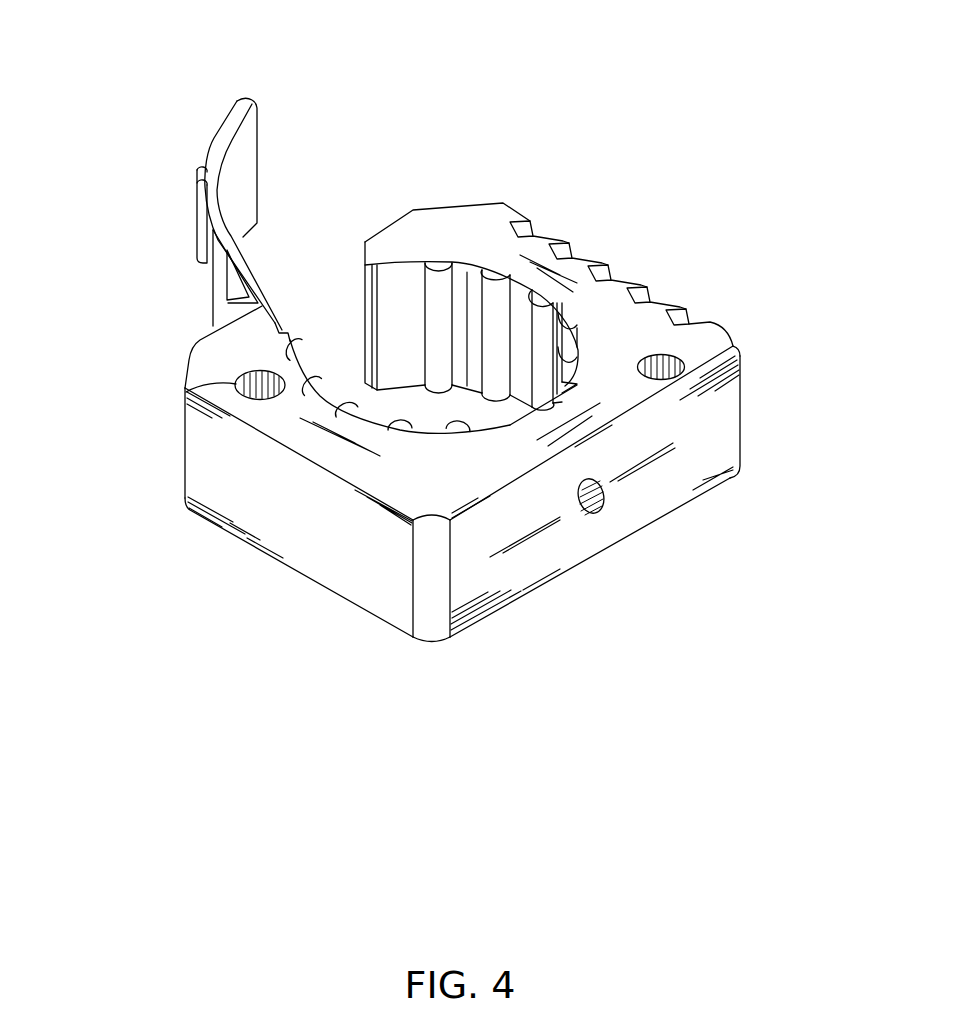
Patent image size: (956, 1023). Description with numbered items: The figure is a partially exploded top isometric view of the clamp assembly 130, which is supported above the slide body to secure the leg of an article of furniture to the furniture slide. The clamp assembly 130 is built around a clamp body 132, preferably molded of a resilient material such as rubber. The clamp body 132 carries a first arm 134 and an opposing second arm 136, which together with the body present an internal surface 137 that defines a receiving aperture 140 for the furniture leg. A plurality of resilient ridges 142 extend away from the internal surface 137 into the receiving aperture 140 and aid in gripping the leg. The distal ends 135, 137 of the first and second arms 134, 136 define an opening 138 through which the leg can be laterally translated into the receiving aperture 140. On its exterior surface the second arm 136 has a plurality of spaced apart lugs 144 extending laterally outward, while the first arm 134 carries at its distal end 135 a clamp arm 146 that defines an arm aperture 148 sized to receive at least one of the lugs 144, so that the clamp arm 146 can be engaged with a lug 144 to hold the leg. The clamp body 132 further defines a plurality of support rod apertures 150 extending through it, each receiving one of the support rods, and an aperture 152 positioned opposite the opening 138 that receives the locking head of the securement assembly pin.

The clamp assembly 130 is at (718, 263).
The clamp body 132 is at (212, 525).
The first arm 134 is at (326, 471).
The distal end 135 is at (189, 350).
The second arm 136 is at (414, 210).
The internal surface 137 is at (473, 289).
The opening 138 is at (321, 269).
The receiving aperture 140 is at (404, 322).
The resilient ridges 142 is at (513, 308).
The lugs 144 is at (684, 308).
The clamp arm 146 is at (222, 115).
The arm aperture 148 is at (243, 303).
The support rod apertures 150 is at (733, 341).
The aperture 152 is at (591, 512).